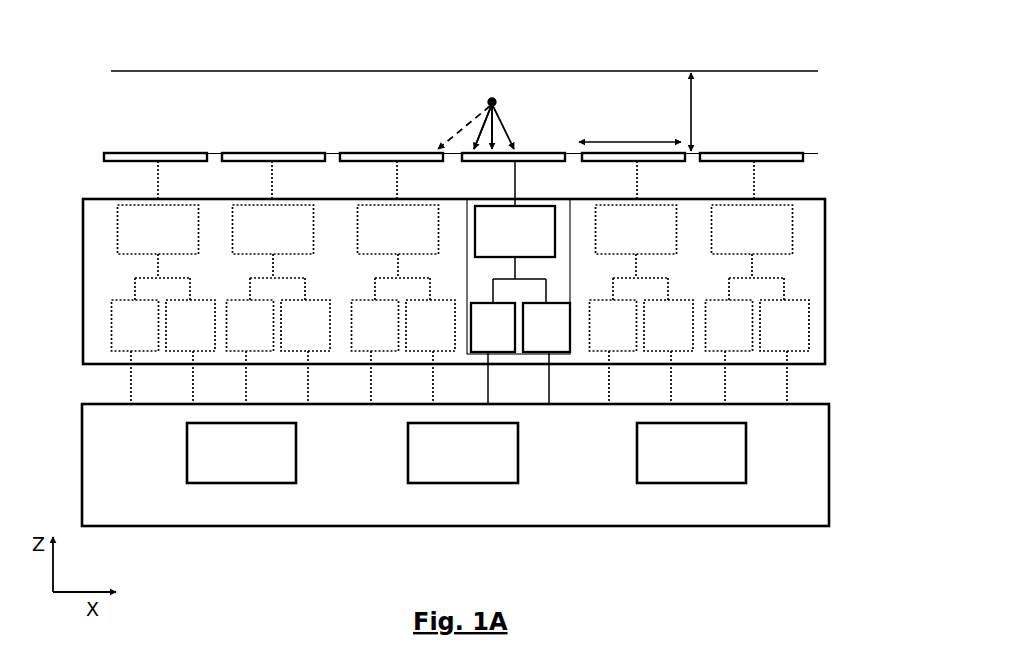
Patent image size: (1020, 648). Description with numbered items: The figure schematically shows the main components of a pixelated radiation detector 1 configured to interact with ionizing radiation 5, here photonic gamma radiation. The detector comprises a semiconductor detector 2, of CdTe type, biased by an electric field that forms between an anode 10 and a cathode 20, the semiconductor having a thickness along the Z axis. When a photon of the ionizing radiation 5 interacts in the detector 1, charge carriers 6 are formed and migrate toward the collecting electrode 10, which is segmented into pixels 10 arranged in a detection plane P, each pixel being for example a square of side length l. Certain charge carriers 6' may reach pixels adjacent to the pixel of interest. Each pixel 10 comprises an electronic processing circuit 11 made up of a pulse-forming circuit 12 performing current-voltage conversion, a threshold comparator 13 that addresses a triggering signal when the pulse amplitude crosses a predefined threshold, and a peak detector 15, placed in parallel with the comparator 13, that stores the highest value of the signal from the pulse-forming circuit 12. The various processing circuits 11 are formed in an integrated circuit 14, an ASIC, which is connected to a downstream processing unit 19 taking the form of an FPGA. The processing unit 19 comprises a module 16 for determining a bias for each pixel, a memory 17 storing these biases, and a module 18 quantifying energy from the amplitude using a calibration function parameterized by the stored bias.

The pixelated radiation detector 1 is at (92, 50).
The semiconductor detector 2 is at (127, 134).
The ionizing radiation 5 is at (498, 100).
The charge carriers 6 is at (517, 115).
The charge carriers reaching adjacent pixels 6' is at (444, 117).
The anode / collecting electrode 10 is at (101, 156).
The electronic processing circuit 11 is at (514, 282).
The pulse-forming circuit 12 is at (541, 236).
The threshold comparator 13 is at (554, 344).
The integrated circuit 14 is at (828, 266).
The peak detector 15 is at (485, 340).
The bias determining module 16 is at (294, 452).
The memory 17 is at (514, 452).
The energy quantifying module 18 is at (743, 452).
The processing unit 19 is at (832, 486).
The cathode 20 is at (252, 68).
The detection plane P is at (822, 152).
The side length l is at (630, 129).